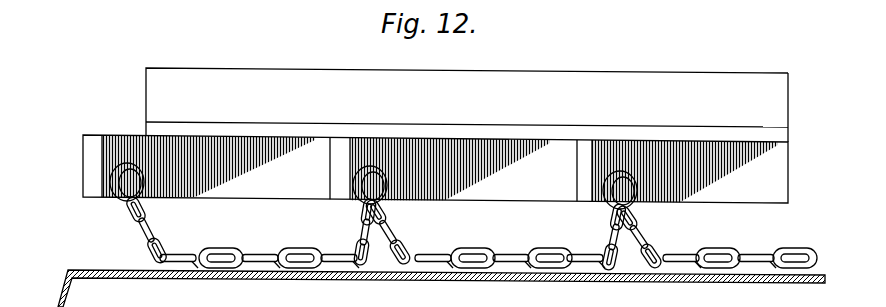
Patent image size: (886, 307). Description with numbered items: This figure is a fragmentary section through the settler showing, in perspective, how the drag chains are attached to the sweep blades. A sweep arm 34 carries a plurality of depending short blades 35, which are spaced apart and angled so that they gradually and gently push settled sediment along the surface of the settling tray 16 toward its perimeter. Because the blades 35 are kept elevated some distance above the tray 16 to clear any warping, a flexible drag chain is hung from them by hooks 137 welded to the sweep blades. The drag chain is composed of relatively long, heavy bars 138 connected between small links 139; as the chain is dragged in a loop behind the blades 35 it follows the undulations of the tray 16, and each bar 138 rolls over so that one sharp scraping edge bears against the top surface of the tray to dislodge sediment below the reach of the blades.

The settling tray 16 is at (135, 280).
The sweep arm 34 is at (236, 68).
The sweep blade 35 is at (435, 138).
The hook 137 is at (118, 136).
The bar 138 is at (257, 250).
The link 139 is at (162, 243).